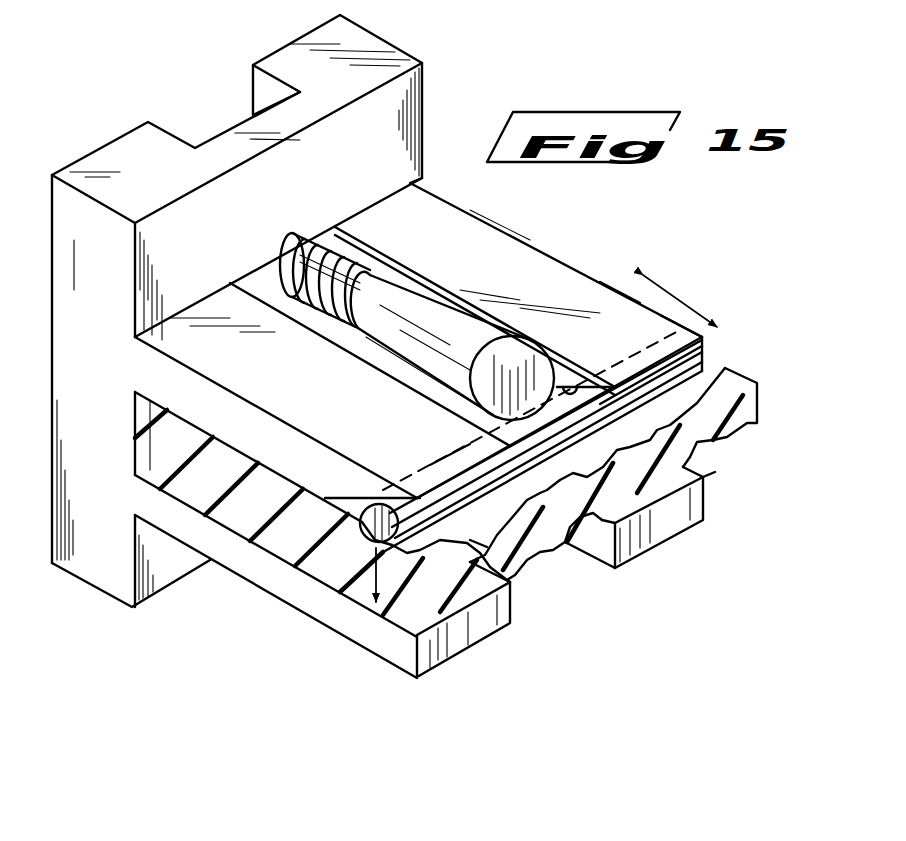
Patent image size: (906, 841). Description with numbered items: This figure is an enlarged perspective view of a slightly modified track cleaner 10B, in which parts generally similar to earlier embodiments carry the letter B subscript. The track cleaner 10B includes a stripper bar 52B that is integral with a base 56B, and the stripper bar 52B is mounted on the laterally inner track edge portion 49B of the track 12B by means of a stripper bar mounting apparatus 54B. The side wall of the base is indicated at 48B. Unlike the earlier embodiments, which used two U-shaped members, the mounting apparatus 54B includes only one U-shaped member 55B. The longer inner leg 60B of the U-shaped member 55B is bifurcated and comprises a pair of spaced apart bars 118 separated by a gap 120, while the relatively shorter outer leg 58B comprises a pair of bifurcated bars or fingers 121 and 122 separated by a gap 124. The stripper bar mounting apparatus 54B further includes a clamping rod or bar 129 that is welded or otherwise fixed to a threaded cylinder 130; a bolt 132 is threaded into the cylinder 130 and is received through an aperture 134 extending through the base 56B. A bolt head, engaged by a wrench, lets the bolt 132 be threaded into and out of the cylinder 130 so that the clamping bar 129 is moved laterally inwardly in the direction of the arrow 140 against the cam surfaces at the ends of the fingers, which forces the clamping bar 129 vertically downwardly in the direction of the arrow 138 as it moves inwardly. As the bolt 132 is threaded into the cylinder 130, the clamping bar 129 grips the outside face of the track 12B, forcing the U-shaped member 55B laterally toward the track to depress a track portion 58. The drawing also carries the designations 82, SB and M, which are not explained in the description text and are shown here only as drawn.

The track cleaner 10B is at (432, 364).
The stripper bar 52B is at (80, 218).
The base 56B is at (215, 160).
The side wall 48B is at (137, 413).
The laterally inner track edge portion 49B is at (163, 453).
The bifurcated bar or finger 121 is at (262, 376).
The gap 124 is at (337, 343).
The gap 120 is at (333, 498).
The stripper bar mounting apparatus 54B is at (518, 286).
The bifurcated bar or finger 122 is at (597, 295).
The U-shaped member 55B is at (730, 262).
The arrow 140 is at (687, 297).
The threaded cylinder 130 is at (453, 320).
The aperture 134 is at (283, 270).
The bolt 132 is at (340, 248).
The hidden bore 82 is at (567, 390).
The slot SB is at (472, 505).
The track portion 58 is at (705, 350).
The shorter outer leg 58B is at (718, 332).
The clamping rod or bar 129 is at (727, 340).
The track 12B is at (357, 590).
The arrow 138 is at (386, 620).
The material M is at (473, 543).
The spaced apart bars 118 is at (477, 630).
The longer inner leg 60B is at (766, 503).